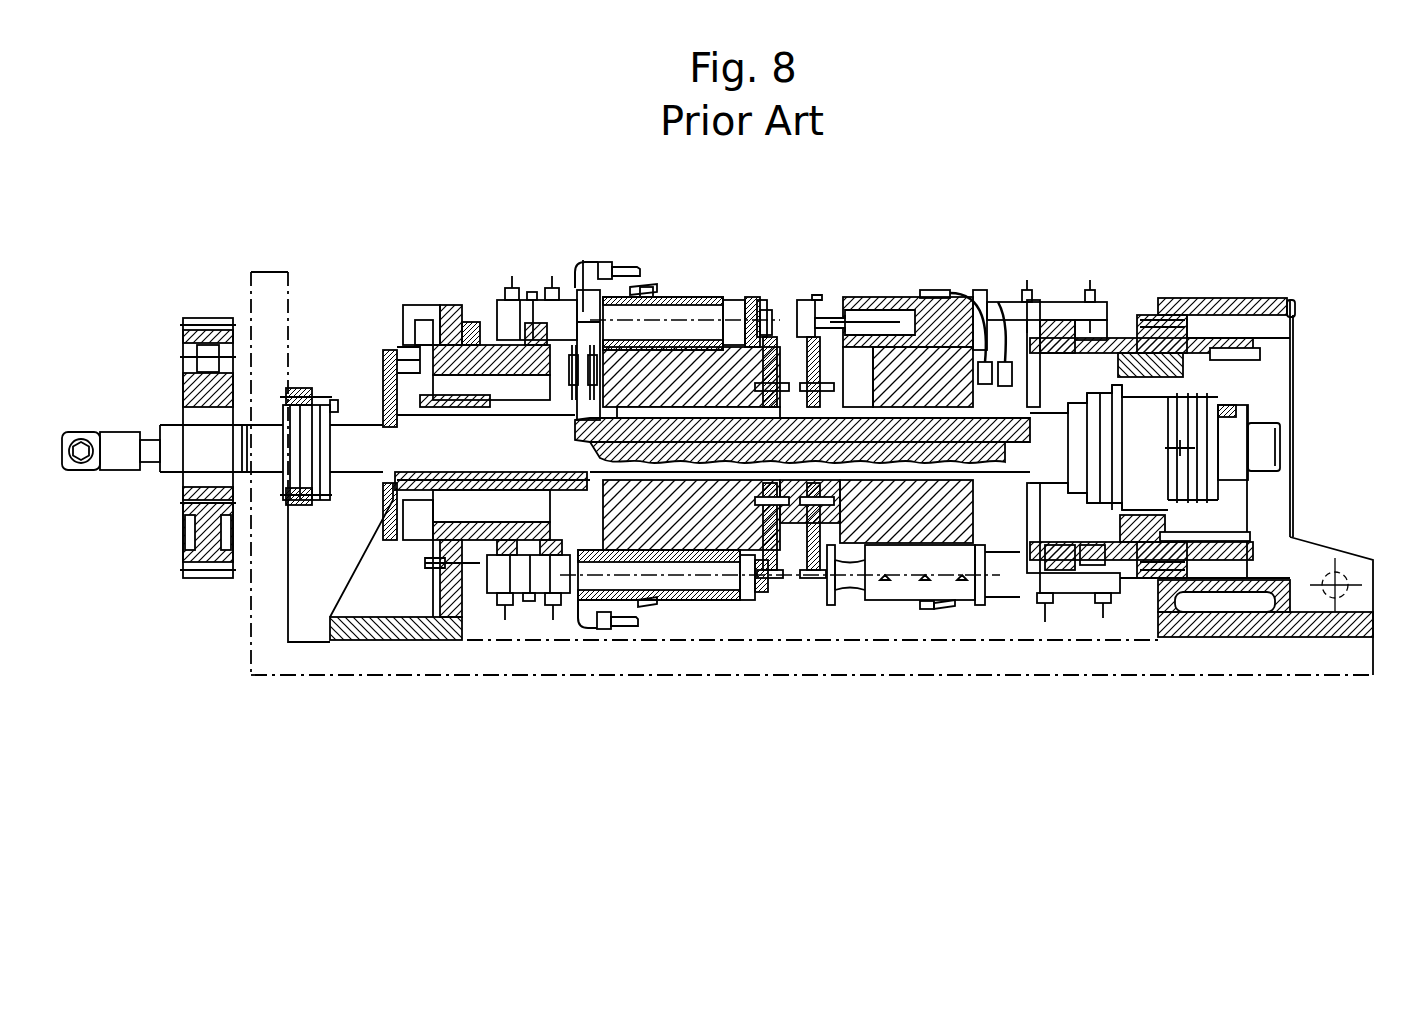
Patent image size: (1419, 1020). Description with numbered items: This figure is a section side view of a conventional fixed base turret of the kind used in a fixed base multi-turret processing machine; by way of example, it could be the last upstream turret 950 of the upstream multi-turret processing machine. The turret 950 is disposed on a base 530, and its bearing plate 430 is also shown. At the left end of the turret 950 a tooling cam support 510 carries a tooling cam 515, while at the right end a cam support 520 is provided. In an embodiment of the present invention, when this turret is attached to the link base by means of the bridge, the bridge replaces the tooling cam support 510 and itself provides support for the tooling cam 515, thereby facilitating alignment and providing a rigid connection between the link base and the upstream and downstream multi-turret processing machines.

The bearing plate 430 is at (268, 272).
The tooling cam support 510 is at (443, 304).
The tooling cam 515 is at (468, 322).
The cam support 520 is at (1250, 298).
The base 530 is at (1327, 657).
The last upstream turret 950 is at (899, 265).